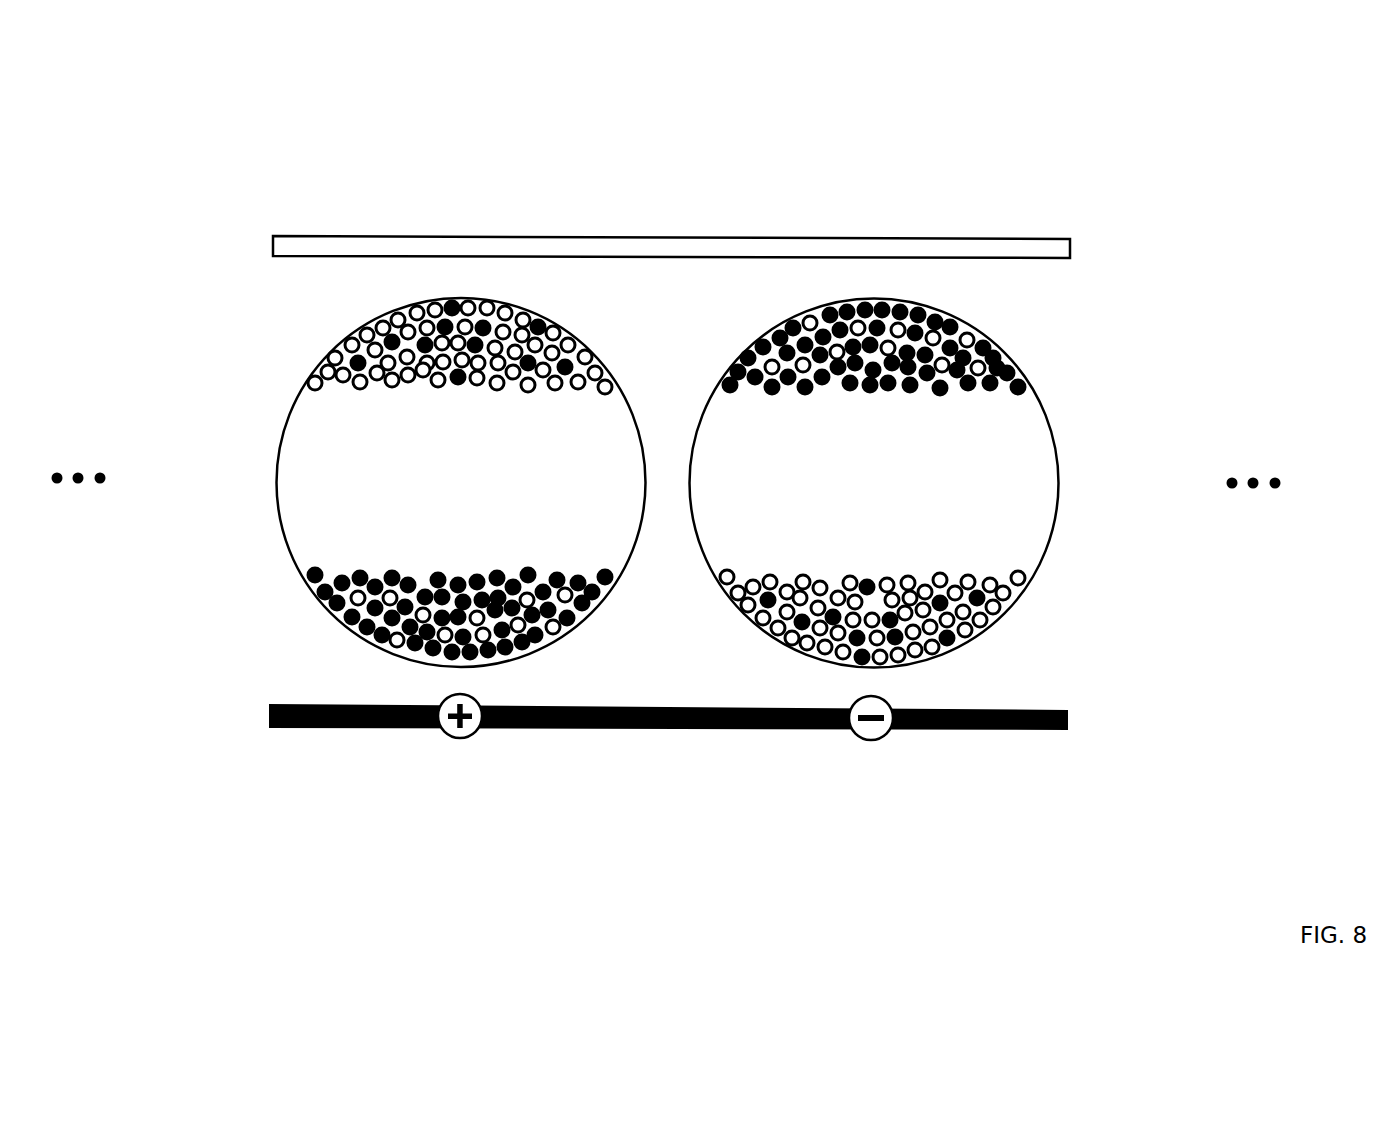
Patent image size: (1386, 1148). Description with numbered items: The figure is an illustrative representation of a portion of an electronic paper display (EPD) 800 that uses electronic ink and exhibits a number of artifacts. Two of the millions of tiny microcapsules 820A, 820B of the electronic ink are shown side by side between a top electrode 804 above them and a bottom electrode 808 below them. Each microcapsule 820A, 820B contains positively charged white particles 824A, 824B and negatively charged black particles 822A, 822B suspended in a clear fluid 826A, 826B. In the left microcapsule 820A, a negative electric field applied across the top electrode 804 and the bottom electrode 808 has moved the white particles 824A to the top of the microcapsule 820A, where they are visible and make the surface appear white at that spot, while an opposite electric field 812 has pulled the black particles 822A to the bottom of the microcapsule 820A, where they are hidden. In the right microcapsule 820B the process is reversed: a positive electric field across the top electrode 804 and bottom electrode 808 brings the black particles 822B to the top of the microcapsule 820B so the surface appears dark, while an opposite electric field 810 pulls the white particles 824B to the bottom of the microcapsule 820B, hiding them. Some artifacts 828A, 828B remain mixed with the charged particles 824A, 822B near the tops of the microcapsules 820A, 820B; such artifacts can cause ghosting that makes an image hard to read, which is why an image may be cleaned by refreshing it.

The electronic paper display 800 is at (1206, 108).
The top electrode 804 is at (1070, 240).
The bottom electrode 808 is at (1068, 716).
The opposite electric field 810 is at (882, 738).
The opposite electric field 812 is at (470, 737).
The microcapsule 820A is at (350, 308).
The microcapsule 820B is at (1017, 310).
The black particles 822A is at (302, 578).
The black particles 822B is at (1003, 358).
The white particles 824A is at (320, 368).
The white particles 824B is at (1035, 580).
The clear fluid 826A is at (287, 470).
The clear fluid 826B is at (1040, 493).
The artifacts 828A is at (549, 323).
The artifacts 828B is at (798, 321).